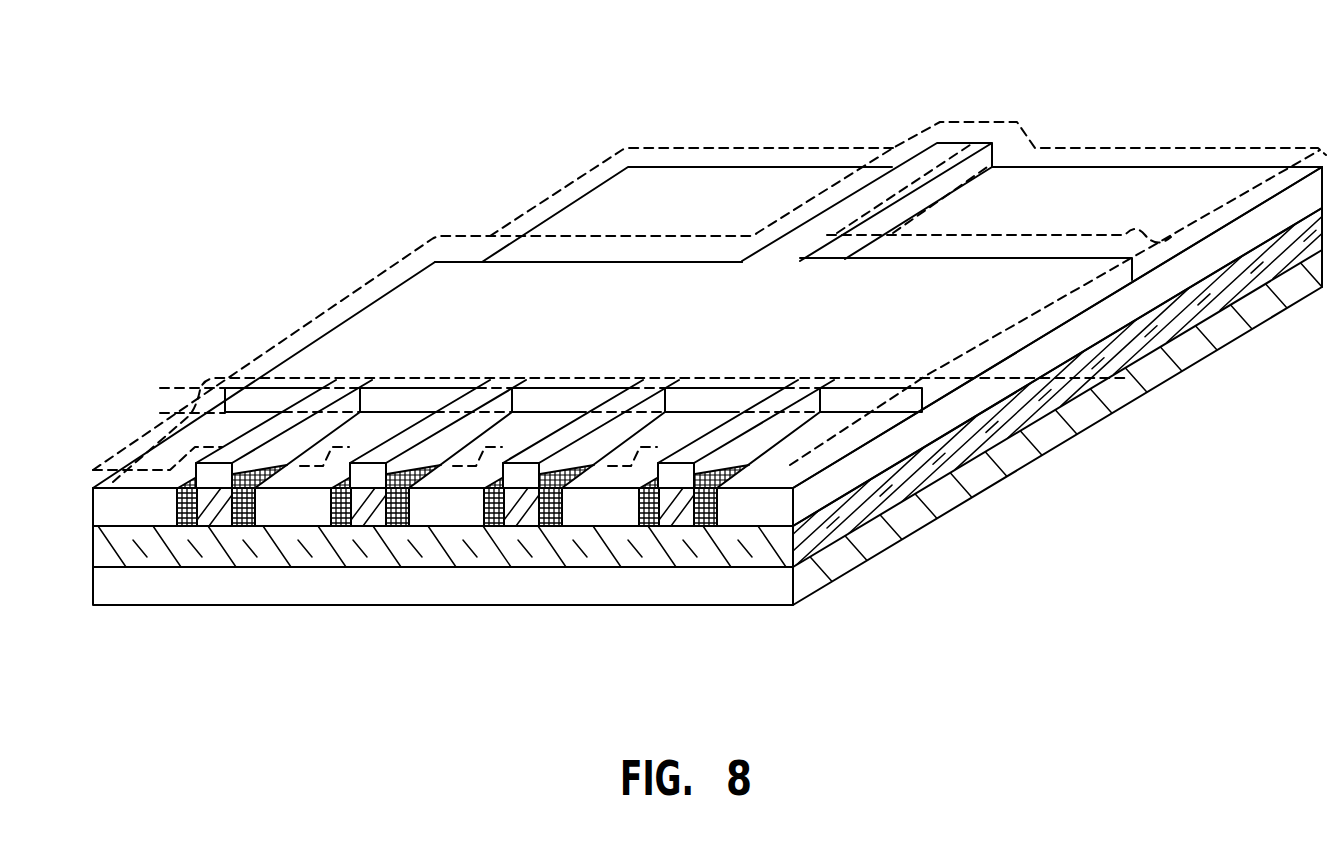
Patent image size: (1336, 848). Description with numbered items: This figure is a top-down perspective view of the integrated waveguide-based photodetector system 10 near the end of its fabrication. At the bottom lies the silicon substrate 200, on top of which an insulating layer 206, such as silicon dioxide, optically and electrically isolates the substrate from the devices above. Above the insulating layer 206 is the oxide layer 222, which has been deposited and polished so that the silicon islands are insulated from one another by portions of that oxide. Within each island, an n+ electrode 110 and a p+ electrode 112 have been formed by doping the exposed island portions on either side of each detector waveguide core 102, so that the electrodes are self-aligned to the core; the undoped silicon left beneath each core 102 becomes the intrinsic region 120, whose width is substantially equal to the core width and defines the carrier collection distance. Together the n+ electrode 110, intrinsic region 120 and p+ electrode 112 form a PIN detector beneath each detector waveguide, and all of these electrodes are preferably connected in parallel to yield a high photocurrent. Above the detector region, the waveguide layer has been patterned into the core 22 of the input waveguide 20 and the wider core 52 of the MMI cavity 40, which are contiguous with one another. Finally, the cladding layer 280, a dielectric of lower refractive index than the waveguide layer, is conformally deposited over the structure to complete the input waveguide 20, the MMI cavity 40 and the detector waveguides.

The integrated waveguide-based photodetector system 10 is at (243, 136).
The input waveguide 20 is at (986, 88).
The core 22 is at (915, 165).
The MMI cavity 40 is at (403, 212).
The core 52 is at (407, 295).
The cladding layer 280 is at (1108, 157).
The cores 102 is at (797, 389).
The oxide layer 222 is at (93, 497).
The insulating layer 206 is at (93, 541).
The silicon substrate 200 is at (93, 586).
The n+ electrode 110 is at (647, 522).
The intrinsic region 120 is at (677, 518).
The p+ electrode 112 is at (709, 523).